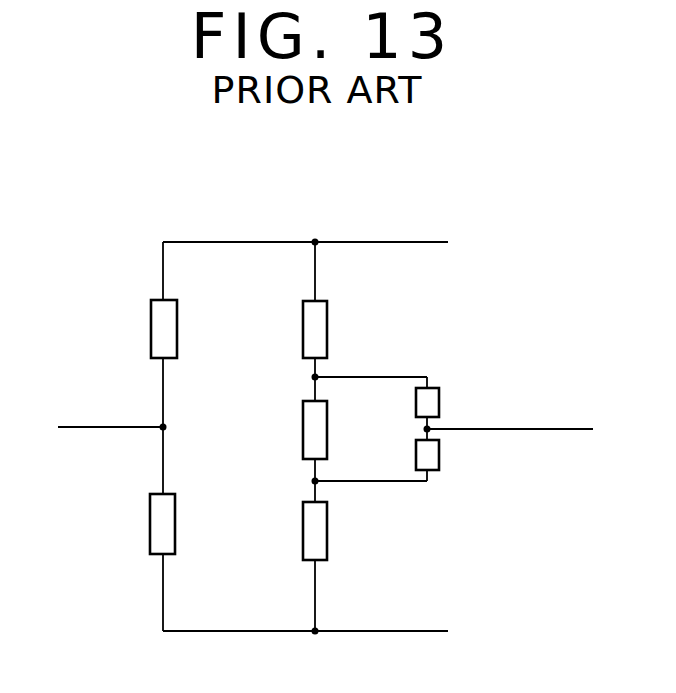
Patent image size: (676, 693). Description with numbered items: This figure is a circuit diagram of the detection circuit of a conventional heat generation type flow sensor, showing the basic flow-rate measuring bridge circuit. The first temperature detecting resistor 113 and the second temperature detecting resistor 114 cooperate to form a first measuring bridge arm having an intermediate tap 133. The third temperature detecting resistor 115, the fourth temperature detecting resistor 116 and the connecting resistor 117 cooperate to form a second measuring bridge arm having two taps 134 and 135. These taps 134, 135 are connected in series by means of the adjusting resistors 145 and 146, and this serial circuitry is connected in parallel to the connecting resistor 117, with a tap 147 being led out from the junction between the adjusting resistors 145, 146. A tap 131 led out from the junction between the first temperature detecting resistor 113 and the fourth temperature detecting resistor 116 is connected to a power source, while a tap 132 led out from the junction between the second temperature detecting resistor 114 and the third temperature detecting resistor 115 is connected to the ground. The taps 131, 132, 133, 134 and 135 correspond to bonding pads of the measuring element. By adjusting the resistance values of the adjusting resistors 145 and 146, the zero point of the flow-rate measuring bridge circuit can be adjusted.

The first temperature detecting resistor 113 is at (160, 338).
The second temperature detecting resistor 114 is at (152, 522).
The third temperature detecting resistor 115 is at (322, 525).
The fourth temperature detecting resistor 116 is at (312, 338).
The connecting resistor 117 is at (313, 437).
The tap 131 is at (395, 243).
The tap 132 is at (424, 630).
The intermediate tap 133 is at (88, 420).
The tap 134 is at (313, 482).
The tap 135 is at (313, 378).
The adjusting resistor 145 is at (436, 398).
The adjusting resistor 146 is at (436, 455).
The tap 147 is at (555, 428).